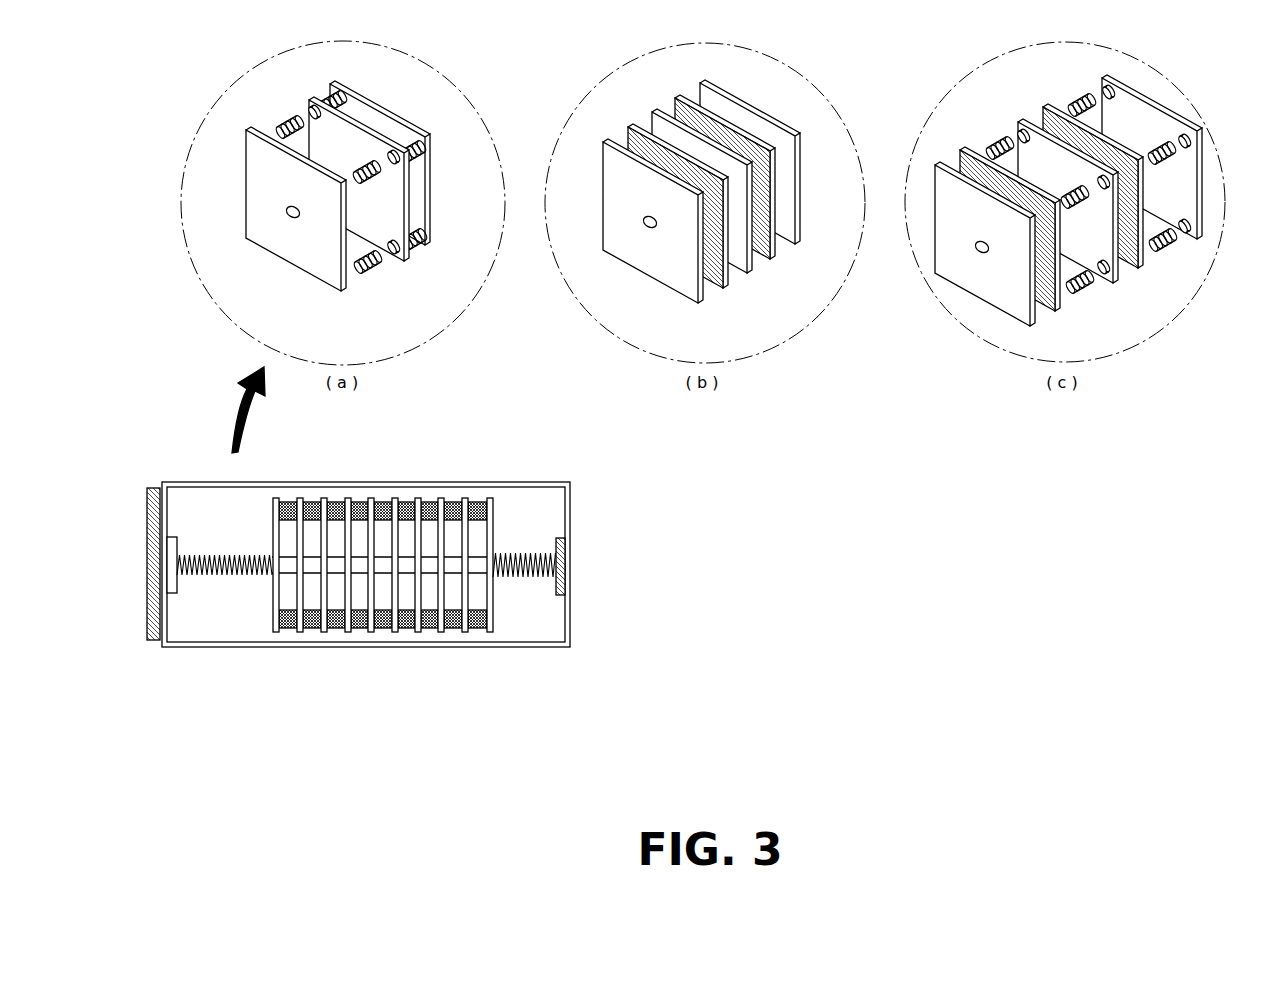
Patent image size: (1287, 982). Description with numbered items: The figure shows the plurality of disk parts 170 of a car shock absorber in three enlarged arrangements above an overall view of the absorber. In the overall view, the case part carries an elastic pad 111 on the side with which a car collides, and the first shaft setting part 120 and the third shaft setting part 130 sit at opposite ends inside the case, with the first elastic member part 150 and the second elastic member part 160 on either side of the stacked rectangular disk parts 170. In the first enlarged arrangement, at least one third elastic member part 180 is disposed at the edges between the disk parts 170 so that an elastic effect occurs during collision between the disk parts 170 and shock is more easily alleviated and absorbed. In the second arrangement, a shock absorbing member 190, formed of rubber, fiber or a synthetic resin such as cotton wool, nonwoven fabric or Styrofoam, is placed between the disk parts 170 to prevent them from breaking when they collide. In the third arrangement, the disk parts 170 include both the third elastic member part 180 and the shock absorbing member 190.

The elastic pad 111 is at (147, 537).
The first shaft setting part 120 is at (173, 587).
The third shaft setting part 130 is at (560, 593).
The first elastic member part 150 is at (233, 577).
The second elastic member part 160 is at (533, 573).
The disk parts 170 is at (262, 180).
The third elastic member part 180 is at (289, 118).
The shock absorbing member 190 is at (761, 252).